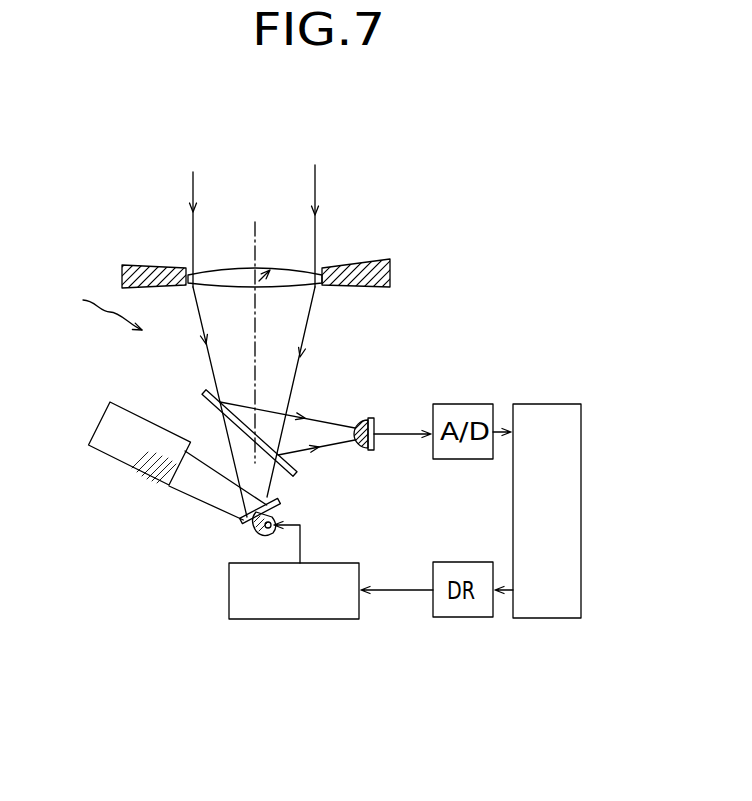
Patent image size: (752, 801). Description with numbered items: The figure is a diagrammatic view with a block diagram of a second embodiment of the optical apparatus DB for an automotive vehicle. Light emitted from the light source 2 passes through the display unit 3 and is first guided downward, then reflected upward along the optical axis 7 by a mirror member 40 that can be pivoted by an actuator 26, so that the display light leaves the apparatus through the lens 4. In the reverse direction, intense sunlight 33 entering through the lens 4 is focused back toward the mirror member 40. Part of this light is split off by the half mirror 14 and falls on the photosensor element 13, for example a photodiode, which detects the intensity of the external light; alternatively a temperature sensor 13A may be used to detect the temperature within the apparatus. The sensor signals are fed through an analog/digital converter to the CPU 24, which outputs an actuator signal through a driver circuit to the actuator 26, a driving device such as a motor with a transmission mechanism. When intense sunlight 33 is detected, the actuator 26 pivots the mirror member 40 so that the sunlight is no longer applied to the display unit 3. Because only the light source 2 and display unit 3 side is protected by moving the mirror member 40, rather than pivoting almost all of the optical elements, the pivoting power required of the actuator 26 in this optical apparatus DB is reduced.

The sunlight 33 is at (317, 200).
The lens 4 is at (279, 268).
The optical axis 7 is at (256, 345).
The optical apparatus DB is at (94, 306).
The light source 2 is at (178, 450).
The display unit 3 is at (196, 440).
The half mirror 14 is at (294, 476).
The photosensor element 13 is at (390, 409).
The temperature sensor 13A is at (358, 422).
The CPU 24 is at (581, 493).
The actuator 26 is at (340, 615).
The mirror member 40 is at (245, 520).